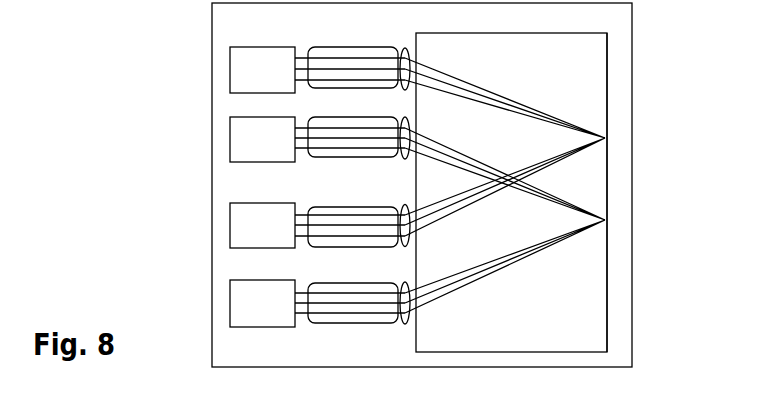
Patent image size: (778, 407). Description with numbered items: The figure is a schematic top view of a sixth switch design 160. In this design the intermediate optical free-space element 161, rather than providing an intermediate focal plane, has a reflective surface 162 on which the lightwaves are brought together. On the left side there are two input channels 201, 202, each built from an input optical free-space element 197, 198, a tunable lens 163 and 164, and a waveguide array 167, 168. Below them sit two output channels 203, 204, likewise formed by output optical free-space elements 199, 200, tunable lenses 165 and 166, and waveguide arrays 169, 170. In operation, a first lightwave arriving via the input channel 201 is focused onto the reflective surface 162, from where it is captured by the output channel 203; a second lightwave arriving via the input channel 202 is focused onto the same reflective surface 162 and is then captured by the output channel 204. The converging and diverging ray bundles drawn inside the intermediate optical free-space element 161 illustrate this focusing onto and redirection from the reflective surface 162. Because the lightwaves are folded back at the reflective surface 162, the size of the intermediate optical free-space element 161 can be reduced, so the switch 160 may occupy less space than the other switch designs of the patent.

The switch design 160 is at (632, 25).
The intermediate optical free-space element 161 is at (577, 332).
The reflective surface 162 is at (607, 85).
The tunable lens 163 is at (322, 46).
The tunable lens 164 is at (320, 117).
The tunable lens 165 is at (322, 207).
The tunable lens 166 is at (320, 283).
The waveguide array 167 is at (407, 48).
The waveguide array 168 is at (405, 118).
The waveguide array 169 is at (407, 206).
The waveguide array 170 is at (407, 284).
The input optical free-space element 197 is at (281, 82).
The input optical free-space element 198 is at (281, 152).
The output optical free-space element 199 is at (281, 238).
The output optical free-space element 200 is at (281, 316).
The input channel 201 is at (230, 70).
The input channel 202 is at (230, 141).
The output channel 203 is at (230, 227).
The output channel 204 is at (230, 305).